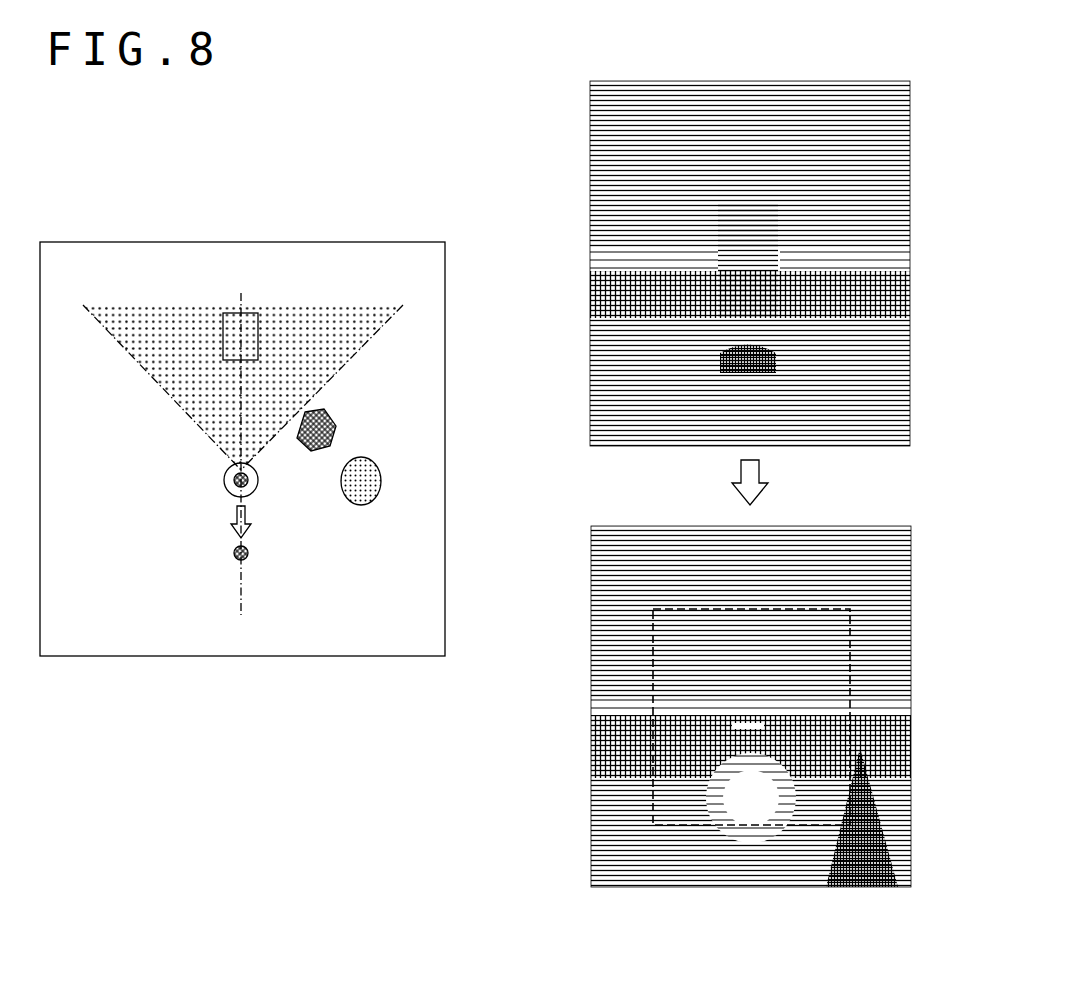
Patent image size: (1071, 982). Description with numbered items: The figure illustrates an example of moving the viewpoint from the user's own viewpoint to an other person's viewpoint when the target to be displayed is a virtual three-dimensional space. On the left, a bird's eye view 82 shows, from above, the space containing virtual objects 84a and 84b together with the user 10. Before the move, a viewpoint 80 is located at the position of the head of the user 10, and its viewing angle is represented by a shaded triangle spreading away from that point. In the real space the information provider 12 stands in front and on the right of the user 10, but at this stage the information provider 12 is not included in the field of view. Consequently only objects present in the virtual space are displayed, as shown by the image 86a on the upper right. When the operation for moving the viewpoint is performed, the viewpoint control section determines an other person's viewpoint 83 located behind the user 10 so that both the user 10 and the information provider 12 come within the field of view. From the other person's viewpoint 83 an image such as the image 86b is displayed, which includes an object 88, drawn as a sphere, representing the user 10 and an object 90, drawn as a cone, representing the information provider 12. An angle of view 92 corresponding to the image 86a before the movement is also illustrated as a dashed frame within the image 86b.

The bird's eye view 82 is at (318, 234).
The virtual object 84a is at (215, 305).
The virtual object 84b is at (372, 462).
The user 10 is at (222, 462).
The viewpoint 80 is at (227, 477).
The other person's viewpoint 83 is at (227, 544).
The information provider 12 is at (323, 413).
The image 86a is at (583, 112).
The image 86b is at (583, 575).
The object 88 is at (695, 860).
The object 90 is at (877, 832).
The angle of view 92 is at (645, 688).